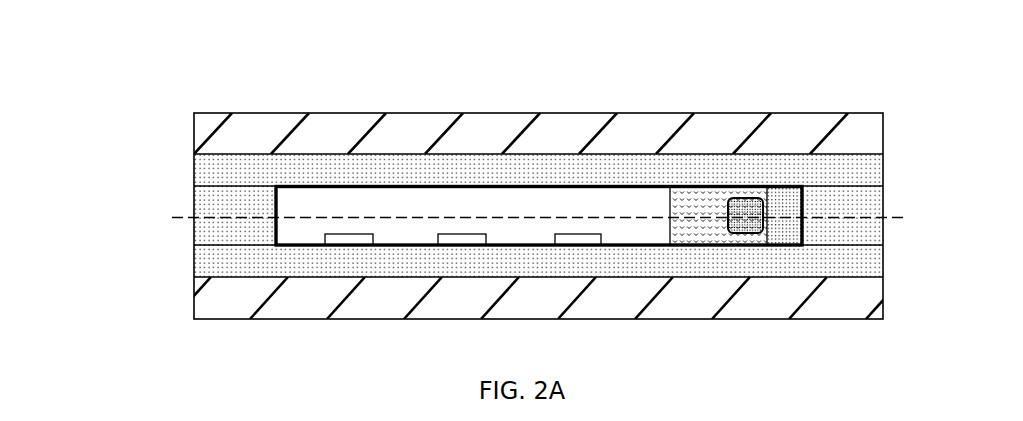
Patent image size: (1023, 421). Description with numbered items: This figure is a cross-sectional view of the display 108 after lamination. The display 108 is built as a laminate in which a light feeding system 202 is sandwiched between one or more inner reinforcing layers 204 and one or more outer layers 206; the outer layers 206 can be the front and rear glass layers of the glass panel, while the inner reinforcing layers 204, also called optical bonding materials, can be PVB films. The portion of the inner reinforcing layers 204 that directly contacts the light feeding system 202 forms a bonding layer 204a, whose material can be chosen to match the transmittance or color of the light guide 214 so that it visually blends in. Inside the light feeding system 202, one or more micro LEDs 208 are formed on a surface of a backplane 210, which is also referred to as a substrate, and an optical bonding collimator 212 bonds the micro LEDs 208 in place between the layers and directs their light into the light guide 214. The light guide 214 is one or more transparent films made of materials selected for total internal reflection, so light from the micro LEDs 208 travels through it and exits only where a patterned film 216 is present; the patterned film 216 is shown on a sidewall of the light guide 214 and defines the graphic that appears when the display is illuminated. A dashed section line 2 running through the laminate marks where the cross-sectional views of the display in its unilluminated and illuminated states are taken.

The display 108 is at (77, 41).
The light feeding system 202 is at (279, 181).
The inner reinforcing layers 204 is at (194, 170).
The bonding layer 204a is at (194, 200).
The outer layers 206 is at (194, 137).
The micro LED 208 is at (752, 229).
The backplane 210 is at (787, 200).
The optical bonding collimator 212 is at (690, 200).
The light guide 214 is at (409, 201).
The patterned film 216 is at (467, 244).
The section line 2- 2 is at (172, 226).